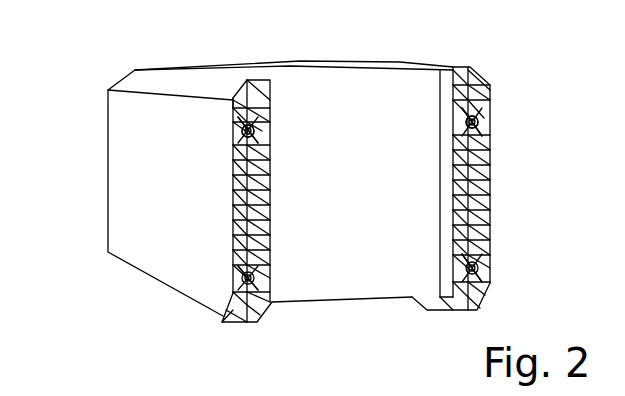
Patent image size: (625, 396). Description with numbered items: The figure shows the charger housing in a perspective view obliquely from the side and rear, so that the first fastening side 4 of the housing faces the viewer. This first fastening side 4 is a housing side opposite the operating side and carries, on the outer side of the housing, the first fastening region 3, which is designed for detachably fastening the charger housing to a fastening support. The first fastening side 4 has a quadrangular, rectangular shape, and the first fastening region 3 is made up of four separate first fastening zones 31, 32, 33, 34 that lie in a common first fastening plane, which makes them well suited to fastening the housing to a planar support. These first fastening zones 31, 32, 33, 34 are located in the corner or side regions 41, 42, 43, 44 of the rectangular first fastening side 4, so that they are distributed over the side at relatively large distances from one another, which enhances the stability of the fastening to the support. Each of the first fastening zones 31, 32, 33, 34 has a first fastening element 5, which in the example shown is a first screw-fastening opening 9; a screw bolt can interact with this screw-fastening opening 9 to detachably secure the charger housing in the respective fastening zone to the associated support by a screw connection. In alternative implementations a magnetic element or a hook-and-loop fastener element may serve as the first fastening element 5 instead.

The first fastening side 4 is at (415, 215).
The corner or side region of the first fastening side 41 is at (478, 82).
The corner or side region of the first fastening side 42 is at (453, 312).
The corner or side region of the first fastening side 43 is at (247, 80).
The corner or side region of the first fastening side 44 is at (246, 323).
The first fastening element 5 is at (242, 131).
The first screw-fastening opening 9 is at (360, 126).
The first fastening region 3 is at (360, 199).
The first fastening zone 31 is at (480, 141).
The first fastening zone 32 is at (480, 282).
The first fastening zone 33 is at (240, 147).
The first fastening zone 34 is at (235, 278).